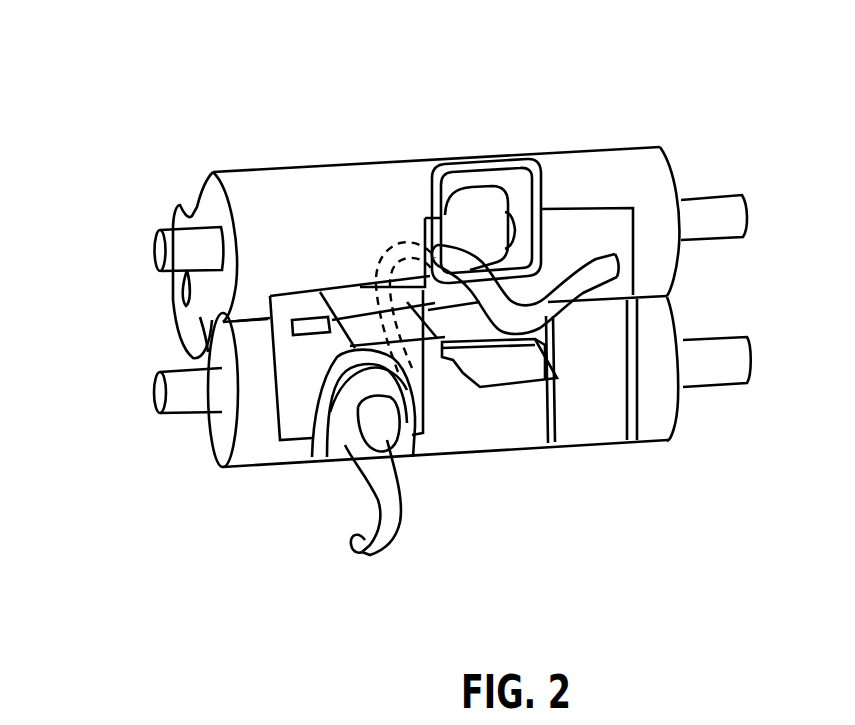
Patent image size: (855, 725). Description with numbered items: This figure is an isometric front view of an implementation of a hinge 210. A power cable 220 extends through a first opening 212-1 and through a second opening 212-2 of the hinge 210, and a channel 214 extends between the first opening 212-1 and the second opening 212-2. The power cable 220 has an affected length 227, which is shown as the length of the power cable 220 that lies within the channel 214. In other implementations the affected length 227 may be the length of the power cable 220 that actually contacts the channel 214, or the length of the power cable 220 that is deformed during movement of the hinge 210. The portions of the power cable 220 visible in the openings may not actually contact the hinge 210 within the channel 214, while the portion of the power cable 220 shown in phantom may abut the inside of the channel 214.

The hinge 210 is at (138, 60).
The first opening 212-1 is at (328, 470).
The second opening 212-2 is at (538, 154).
The channel 214 is at (487, 212).
The power cable 220 is at (401, 560).
The affected length 227 is at (393, 260).